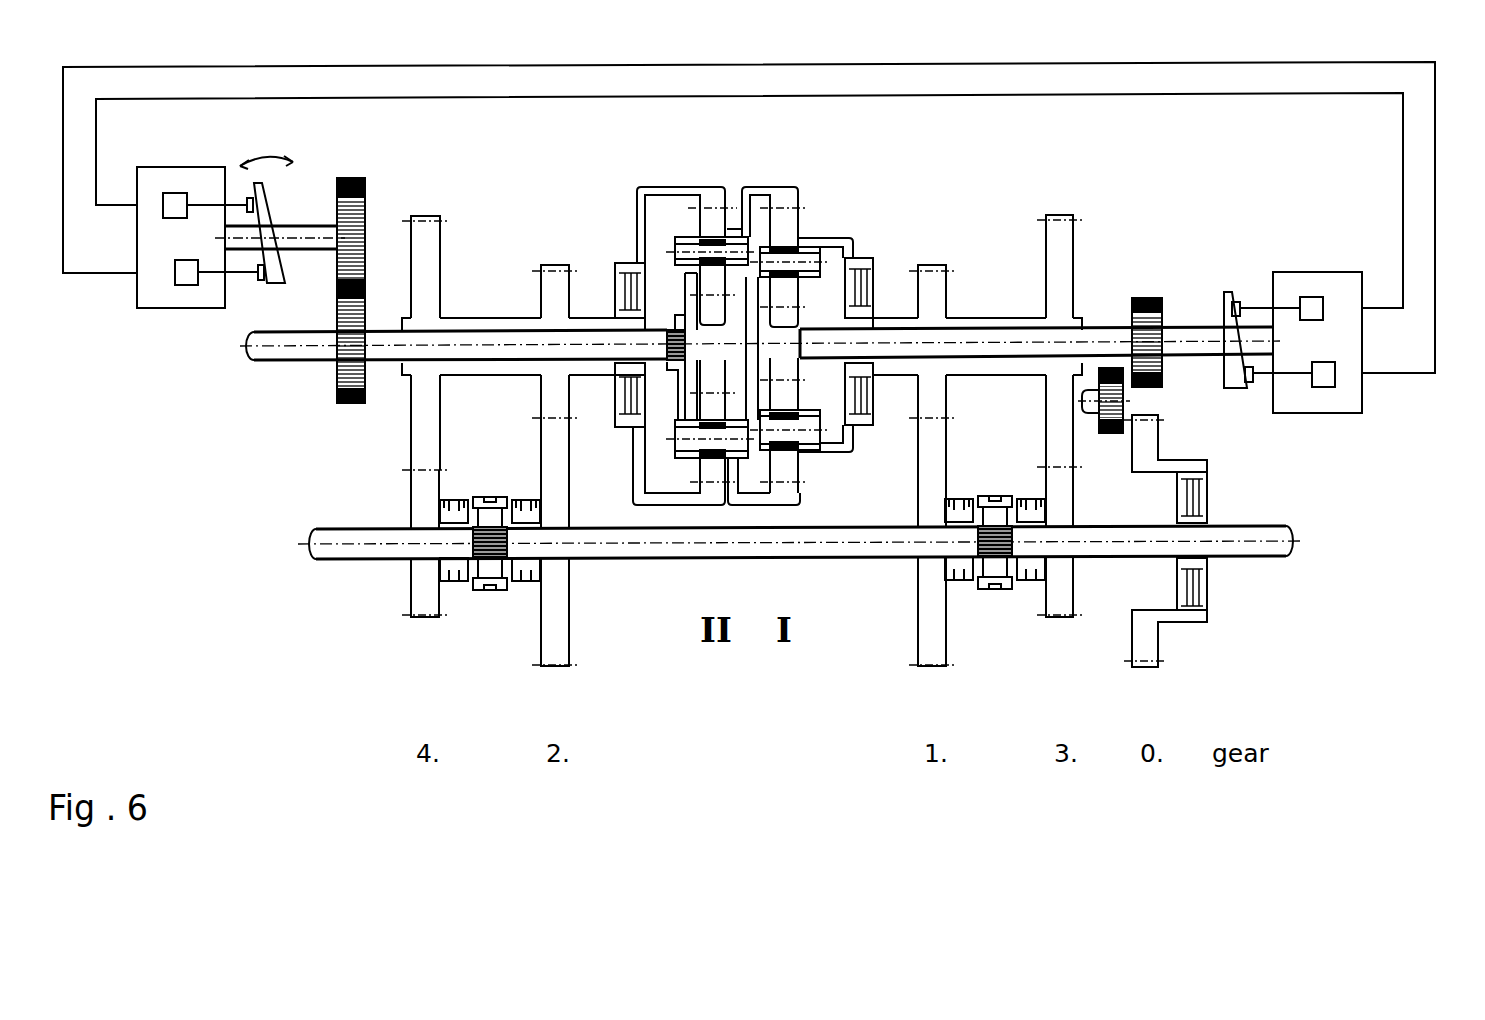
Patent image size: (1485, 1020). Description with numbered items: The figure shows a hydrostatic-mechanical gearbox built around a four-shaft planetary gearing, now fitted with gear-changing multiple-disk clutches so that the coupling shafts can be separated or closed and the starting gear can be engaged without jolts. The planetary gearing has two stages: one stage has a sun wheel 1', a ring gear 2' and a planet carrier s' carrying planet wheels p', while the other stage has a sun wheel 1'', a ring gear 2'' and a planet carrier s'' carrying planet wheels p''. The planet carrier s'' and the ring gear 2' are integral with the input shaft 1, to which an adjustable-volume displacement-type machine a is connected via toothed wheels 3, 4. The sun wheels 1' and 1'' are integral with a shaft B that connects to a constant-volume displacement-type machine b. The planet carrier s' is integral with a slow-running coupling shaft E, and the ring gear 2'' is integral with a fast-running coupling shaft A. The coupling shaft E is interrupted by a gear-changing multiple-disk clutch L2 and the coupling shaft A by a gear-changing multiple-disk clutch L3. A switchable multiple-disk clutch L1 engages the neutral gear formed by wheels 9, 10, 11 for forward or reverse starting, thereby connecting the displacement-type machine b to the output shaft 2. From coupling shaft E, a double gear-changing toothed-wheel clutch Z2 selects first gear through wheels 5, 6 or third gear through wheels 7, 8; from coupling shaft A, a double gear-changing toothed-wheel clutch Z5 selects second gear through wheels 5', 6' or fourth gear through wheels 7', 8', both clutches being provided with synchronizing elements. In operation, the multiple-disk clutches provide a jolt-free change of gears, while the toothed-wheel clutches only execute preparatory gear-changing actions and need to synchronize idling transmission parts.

The input shaft 1 is at (760, 370).
The sun wheel 1' is at (798, 302).
The sun wheel 1'' is at (727, 295).
The output shaft 2 is at (799, 566).
The ring gear 2' is at (790, 204).
The ring gear 2'' is at (687, 206).
The toothed wheel 3 is at (352, 404).
The toothed wheel 4 is at (360, 178).
The wheel 5 is at (943, 341).
The wheel 5' is at (542, 341).
The wheel 6 is at (944, 542).
The wheel 6' is at (571, 542).
The wheel 7 is at (1071, 341).
The wheel 7' is at (440, 343).
The wheel 8 is at (1068, 542).
The wheel 8' is at (410, 543).
The wheel 9 is at (1150, 298).
The wheel 10 is at (1110, 433).
The wheel 11 is at (1148, 442).
The adjustable-volume displacement-type machine a is at (157, 302).
The constant-volume displacement-type machine b is at (1340, 404).
The fast-running coupling shaft A is at (632, 473).
The shaft B is at (1195, 337).
The slow-running coupling shaft E is at (836, 450).
The switchable multiple-disk clutch L1 is at (1196, 583).
The gear-changing multiple-disk clutch L2 is at (871, 318).
The gear-changing multiple-disk clutch L3 is at (620, 319).
The double gear-changing toothed-wheel clutch Z2 is at (995, 519).
The double gear-changing toothed-wheel clutch Z5 is at (490, 520).
The planet wheels p' is at (802, 252).
The planet wheels p'' is at (691, 247).
The planet carrier s' is at (779, 376).
The planet carrier s'' is at (701, 347).